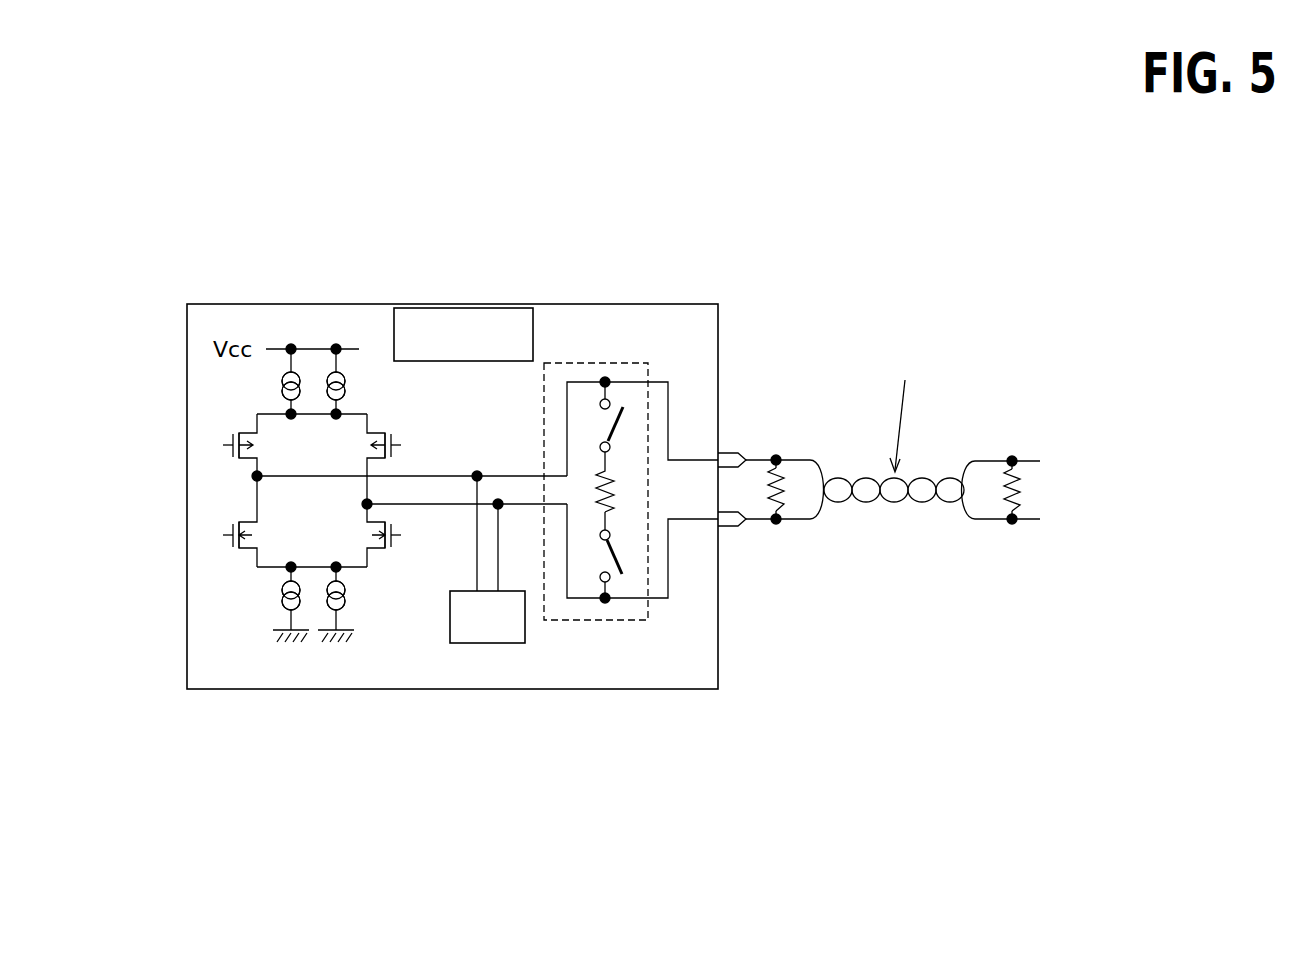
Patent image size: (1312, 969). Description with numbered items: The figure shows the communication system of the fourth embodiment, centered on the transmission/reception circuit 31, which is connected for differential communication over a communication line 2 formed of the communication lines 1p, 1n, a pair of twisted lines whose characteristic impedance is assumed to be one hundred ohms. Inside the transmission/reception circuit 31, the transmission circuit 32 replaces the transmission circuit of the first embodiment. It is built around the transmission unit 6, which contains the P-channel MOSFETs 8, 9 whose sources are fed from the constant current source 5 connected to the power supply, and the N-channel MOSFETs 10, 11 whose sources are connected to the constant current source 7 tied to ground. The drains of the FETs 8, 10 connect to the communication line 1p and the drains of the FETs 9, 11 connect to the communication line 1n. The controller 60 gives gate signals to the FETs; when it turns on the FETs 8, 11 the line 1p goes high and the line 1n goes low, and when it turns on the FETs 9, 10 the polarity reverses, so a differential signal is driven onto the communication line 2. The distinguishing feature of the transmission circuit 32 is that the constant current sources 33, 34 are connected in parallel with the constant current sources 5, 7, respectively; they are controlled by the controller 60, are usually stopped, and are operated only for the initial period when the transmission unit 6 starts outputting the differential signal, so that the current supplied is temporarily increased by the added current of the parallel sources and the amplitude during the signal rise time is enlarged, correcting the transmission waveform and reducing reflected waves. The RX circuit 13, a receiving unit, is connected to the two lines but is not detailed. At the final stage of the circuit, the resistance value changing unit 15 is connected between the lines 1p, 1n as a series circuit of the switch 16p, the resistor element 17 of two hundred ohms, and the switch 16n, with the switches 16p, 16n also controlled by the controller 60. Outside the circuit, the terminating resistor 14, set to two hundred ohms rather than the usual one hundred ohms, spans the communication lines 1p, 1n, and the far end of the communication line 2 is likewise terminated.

The transmission/reception circuit 31 is at (452, 304).
The controller 60 is at (463, 335).
The constant current source 5 is at (280, 380).
The constant current source 33 is at (352, 374).
The transmission unit 6 is at (241, 488).
The P-channel MOSFET 8 is at (231, 440).
The P-channel MOSFET 9 is at (403, 443).
The N-channel MOSFET 10 is at (228, 538).
The N-channel MOSFET 11 is at (395, 538).
The constant current source 7 is at (277, 611).
The constant current source 34 is at (351, 610).
The transmission circuit 32 is at (403, 421).
The RX circuit 13 is at (489, 643).
The resistance value changing unit 15 is at (631, 473).
The switch 16p is at (624, 415).
The switch 16n is at (624, 565).
The resistor element 17 is at (643, 488).
The communication line 1p is at (798, 453).
The communication line 1n is at (803, 523).
The terminating resistor 14 is at (794, 493).
The communication line 2 is at (942, 446).